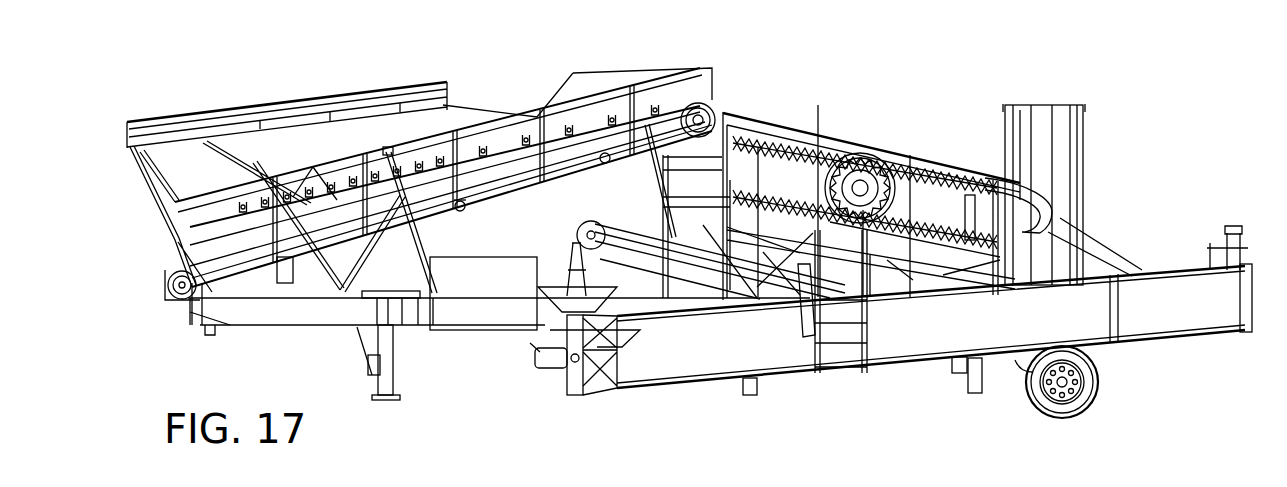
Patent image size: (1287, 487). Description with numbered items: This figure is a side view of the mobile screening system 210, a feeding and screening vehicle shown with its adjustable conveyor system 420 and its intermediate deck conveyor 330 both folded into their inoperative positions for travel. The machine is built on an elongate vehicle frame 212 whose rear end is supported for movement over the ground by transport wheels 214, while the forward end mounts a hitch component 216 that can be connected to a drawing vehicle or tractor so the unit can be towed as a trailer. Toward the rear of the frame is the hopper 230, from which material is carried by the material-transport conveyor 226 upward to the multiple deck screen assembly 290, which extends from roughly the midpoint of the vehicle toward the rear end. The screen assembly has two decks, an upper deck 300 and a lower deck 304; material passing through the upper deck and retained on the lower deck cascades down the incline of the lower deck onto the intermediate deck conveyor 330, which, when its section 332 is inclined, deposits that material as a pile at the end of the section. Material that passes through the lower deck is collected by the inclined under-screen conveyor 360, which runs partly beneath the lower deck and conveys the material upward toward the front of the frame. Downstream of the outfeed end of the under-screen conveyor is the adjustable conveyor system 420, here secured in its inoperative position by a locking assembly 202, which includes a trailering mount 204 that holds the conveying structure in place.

The locking assembly 202 is at (1123, 302).
The trailering mount 204 is at (1123, 323).
The mobile screening system 210 is at (300, 72).
The vehicle frame 212 is at (292, 322).
The transport wheels 214 is at (1090, 405).
The hitch component 216 is at (390, 375).
The material-transport conveyor 226 is at (488, 215).
The hopper 230 is at (108, 114).
The multiple deck screen assembly 290 is at (841, 175).
The upper deck 300 is at (967, 192).
The lower deck 304 is at (965, 200).
The intermediate deck conveyor 330 is at (1100, 180).
The section 332 is at (1050, 168).
The under-screen conveyor 360 is at (625, 215).
The adjustable conveyor system 420 is at (651, 403).